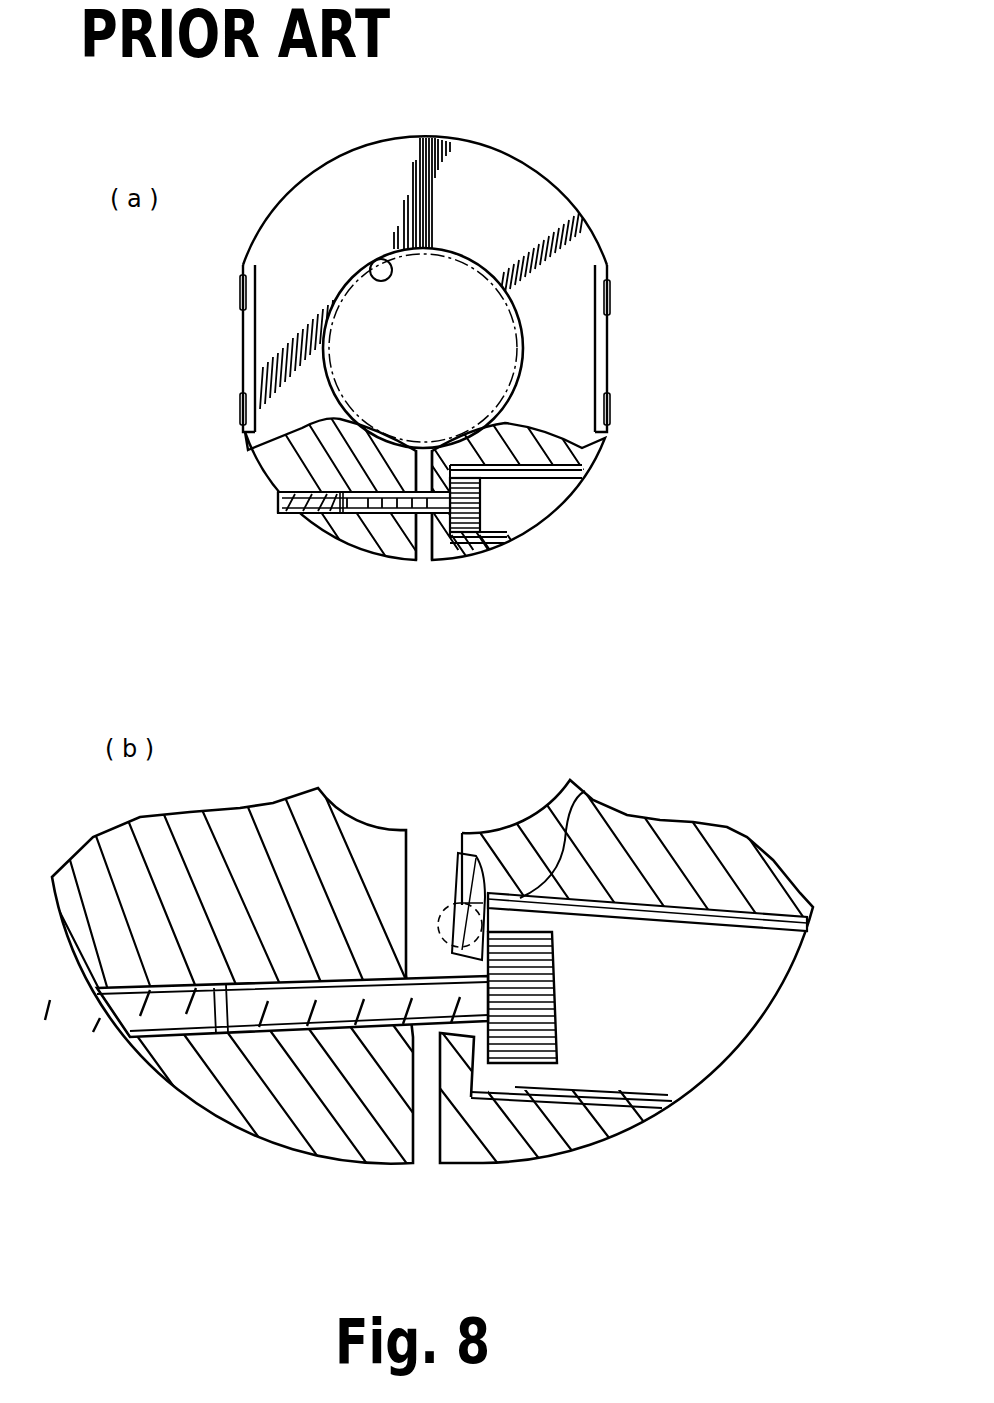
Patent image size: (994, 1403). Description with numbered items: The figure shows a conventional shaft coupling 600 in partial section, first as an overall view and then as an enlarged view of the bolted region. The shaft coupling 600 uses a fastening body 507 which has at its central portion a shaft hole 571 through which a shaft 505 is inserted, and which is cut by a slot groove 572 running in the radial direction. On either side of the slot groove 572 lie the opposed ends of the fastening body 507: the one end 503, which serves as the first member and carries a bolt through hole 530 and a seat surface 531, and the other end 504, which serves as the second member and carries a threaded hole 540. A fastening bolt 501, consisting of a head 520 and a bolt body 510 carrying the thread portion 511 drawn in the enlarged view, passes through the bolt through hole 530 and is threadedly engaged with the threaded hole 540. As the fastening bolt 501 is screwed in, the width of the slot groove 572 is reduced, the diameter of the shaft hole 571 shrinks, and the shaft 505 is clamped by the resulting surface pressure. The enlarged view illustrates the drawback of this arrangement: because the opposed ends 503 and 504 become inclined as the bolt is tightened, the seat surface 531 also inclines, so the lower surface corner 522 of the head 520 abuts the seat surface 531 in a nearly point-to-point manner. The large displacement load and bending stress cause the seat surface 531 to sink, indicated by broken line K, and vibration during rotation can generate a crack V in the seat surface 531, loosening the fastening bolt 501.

The shaft coupling 600 is at (597, 164).
The fastening body 507 is at (475, 180).
The shaft 505 is at (484, 262).
The shaft hole 571 is at (374, 266).
The other end (second member) 504 is at (390, 553).
The one end (first member) 503 is at (443, 550).
The slot groove 572 is at (425, 548).
The bolt through hole 530 is at (588, 480).
The seat surface 531 is at (585, 791).
The lower surface corner 522 is at (490, 930).
The head 520 is at (503, 528).
The fastening bolt 501 is at (498, 508).
The bolt body 510 is at (347, 513).
The thread 511 is at (370, 514).
The threaded hole 540 is at (276, 506).
The crack V is at (455, 872).
The broken line K (sunken seat surface) K is at (460, 880).